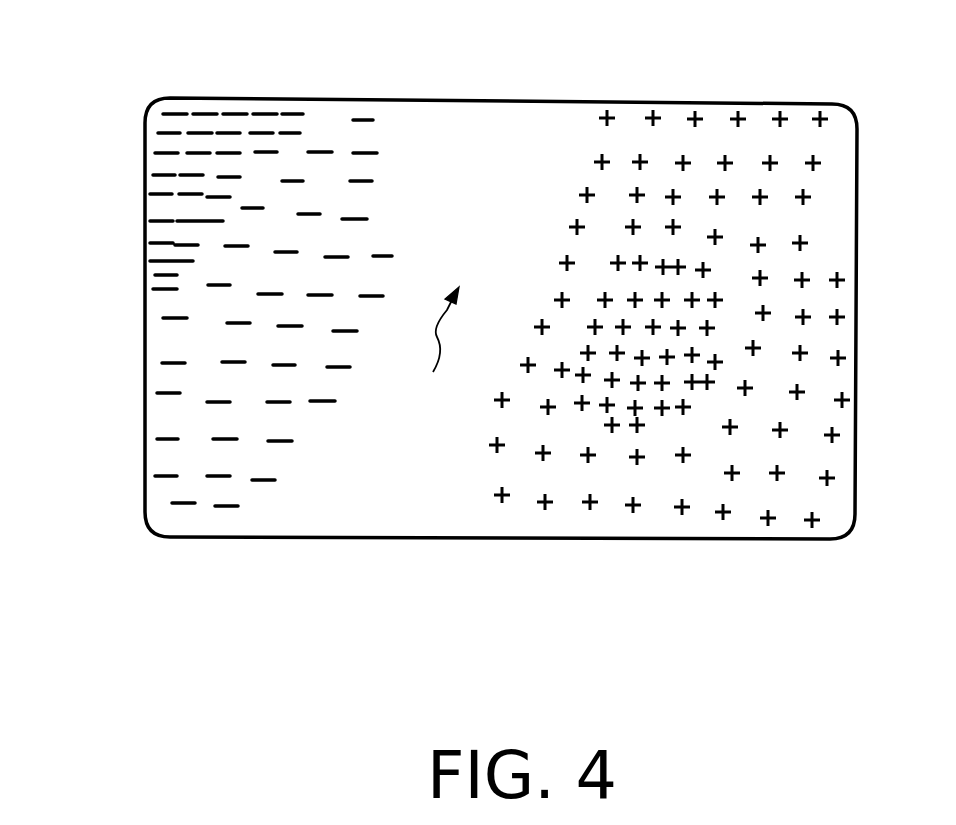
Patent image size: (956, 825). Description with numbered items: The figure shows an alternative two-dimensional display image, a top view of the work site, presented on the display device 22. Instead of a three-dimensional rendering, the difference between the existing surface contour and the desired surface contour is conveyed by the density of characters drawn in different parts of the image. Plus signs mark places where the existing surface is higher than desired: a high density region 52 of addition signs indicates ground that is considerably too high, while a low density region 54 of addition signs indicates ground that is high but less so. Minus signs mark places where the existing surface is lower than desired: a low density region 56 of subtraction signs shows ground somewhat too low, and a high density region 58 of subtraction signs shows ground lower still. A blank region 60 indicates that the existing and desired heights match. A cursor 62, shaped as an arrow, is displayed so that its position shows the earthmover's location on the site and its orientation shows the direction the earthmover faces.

The display device 22 is at (566, 100).
The high density region of addition signs 52 is at (645, 397).
The low density region of addition signs 54 is at (800, 500).
The low density region of subtraction signs 56 is at (163, 333).
The high density region of subtraction signs 58 is at (144, 163).
The blank region 60 is at (351, 503).
The cursor 62 is at (430, 357).